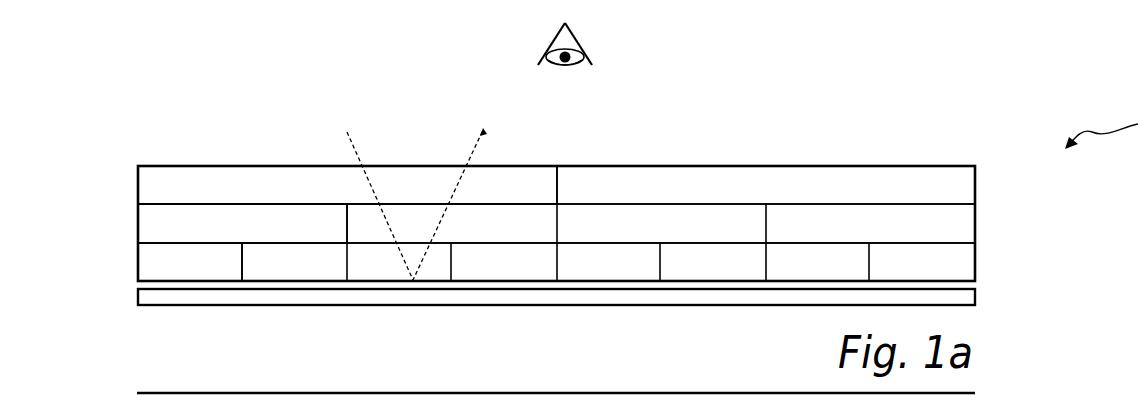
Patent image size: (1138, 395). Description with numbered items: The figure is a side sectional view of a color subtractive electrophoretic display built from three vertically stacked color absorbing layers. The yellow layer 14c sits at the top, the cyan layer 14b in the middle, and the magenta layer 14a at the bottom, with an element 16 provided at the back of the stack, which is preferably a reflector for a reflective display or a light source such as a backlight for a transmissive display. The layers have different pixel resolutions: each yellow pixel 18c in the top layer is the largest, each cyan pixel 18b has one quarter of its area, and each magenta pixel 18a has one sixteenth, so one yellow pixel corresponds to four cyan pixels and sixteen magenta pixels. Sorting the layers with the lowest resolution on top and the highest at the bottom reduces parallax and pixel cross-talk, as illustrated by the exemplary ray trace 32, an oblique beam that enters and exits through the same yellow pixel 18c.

The magenta layer 14a is at (114, 244).
The cyan layer 14b is at (114, 205).
The yellow layer 14c is at (114, 166).
The magenta pixel 18a is at (173, 265).
The cyan pixel 18b is at (214, 225).
The yellow pixel 18c is at (282, 183).
The ray trace 32 is at (358, 155).
The element 16 is at (975, 295).